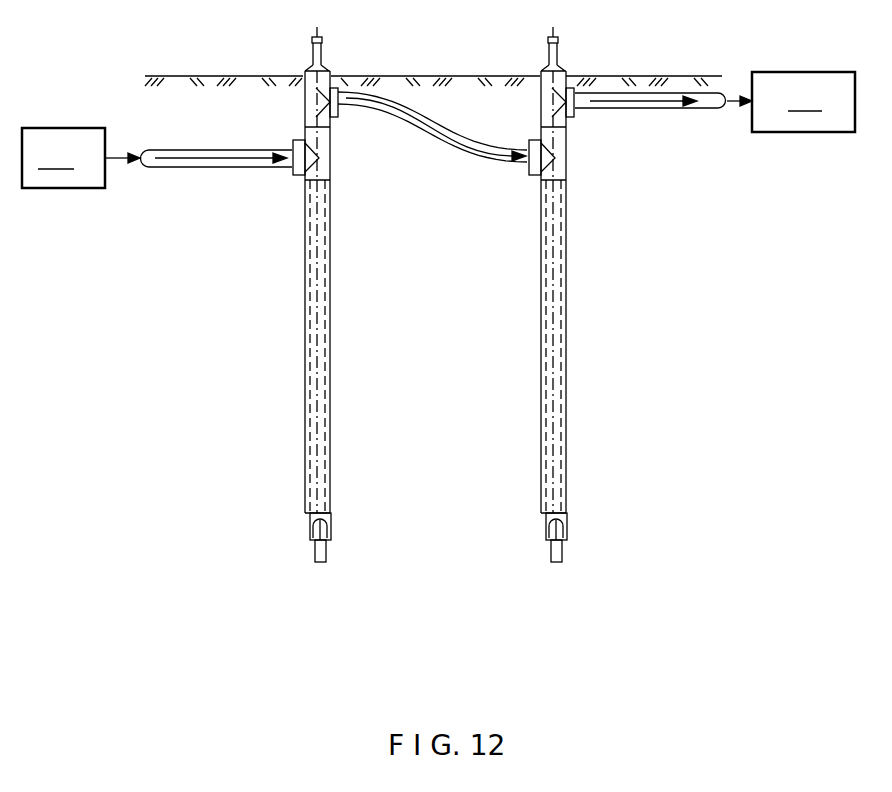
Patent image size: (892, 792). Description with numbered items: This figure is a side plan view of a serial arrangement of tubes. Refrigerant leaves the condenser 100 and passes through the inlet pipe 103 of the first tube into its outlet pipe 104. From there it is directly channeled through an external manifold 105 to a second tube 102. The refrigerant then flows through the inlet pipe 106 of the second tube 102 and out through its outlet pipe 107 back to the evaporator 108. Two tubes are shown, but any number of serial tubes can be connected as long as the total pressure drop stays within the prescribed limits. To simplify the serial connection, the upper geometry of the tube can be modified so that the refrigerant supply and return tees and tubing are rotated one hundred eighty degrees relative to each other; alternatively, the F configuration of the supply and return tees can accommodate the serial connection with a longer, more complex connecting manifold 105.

The condenser 100 is at (157, 158).
The second tube 102 is at (442, 294).
The inlet pipe 103 is at (305, 335).
The outlet pipe 104 is at (318, 283).
The external manifold 105 is at (435, 138).
The inlet pipe 106 is at (602, 346).
The inner tubing of second well 107 is at (608, 346).
The evaporator 108 is at (715, 102).